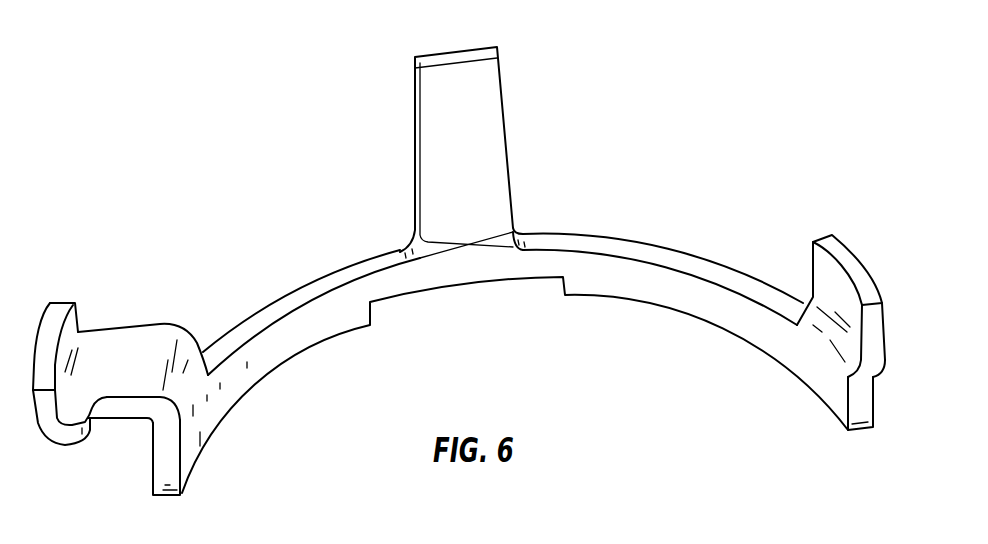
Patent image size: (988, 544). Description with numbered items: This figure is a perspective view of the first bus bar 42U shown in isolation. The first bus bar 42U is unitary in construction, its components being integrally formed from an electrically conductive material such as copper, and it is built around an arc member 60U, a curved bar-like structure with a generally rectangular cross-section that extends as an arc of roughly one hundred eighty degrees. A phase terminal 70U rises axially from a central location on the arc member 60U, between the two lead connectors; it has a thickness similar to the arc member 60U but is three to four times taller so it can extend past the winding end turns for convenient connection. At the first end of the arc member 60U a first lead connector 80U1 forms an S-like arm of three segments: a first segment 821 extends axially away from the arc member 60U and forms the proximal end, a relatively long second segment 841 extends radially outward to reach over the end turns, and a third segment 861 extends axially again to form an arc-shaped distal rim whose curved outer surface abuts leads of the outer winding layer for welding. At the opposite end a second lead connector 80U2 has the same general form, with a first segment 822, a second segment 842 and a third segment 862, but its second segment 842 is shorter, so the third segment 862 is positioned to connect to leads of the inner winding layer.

The first bus bar 42U is at (303, 203).
The arc member 60U is at (640, 248).
The phase terminal 70U is at (500, 80).
The first lead connector 80U1 is at (46, 302).
The first segment 821 is at (167, 438).
The second segment 841 is at (107, 407).
The third segment 861 is at (45, 412).
The second lead connector 80U2 is at (858, 260).
The first segment 822 is at (857, 400).
The second segment 842 is at (860, 375).
The third segment 862 is at (882, 327).